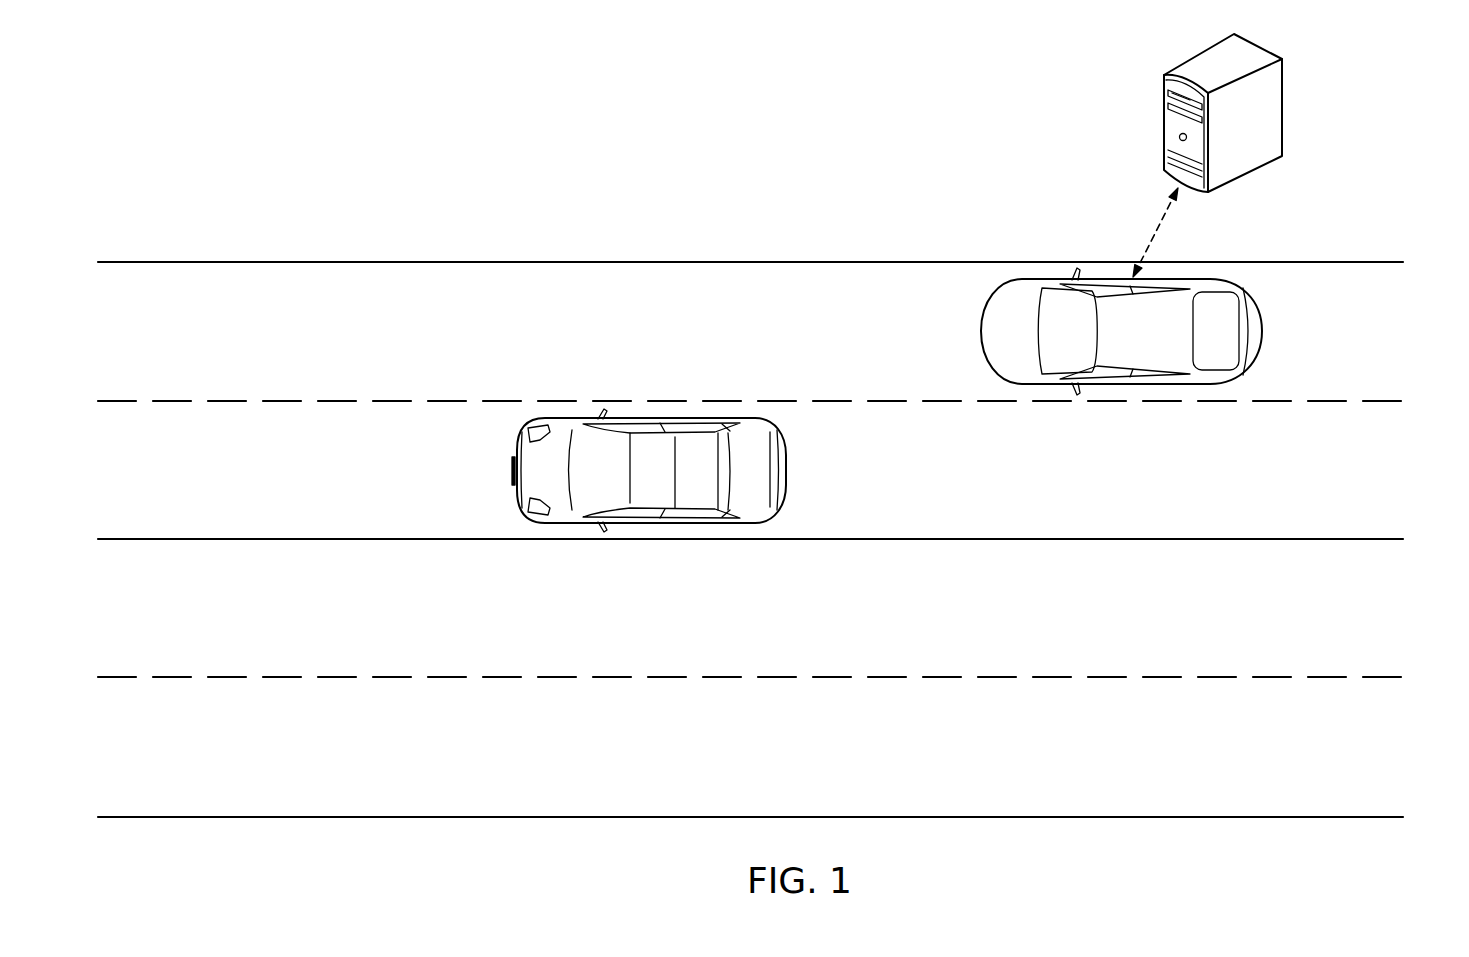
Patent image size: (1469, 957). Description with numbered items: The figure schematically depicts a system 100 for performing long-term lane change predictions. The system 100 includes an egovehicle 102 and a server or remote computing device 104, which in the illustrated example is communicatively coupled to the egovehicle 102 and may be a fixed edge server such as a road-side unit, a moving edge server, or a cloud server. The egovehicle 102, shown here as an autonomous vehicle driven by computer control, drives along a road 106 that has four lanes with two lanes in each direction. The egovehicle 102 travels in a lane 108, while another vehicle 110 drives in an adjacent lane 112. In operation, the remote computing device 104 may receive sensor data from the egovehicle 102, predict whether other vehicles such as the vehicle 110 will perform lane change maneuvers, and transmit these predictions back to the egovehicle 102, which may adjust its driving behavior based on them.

The system 100 is at (230, 128).
The egovehicle 102 is at (1135, 386).
The remote computing device 104 is at (1282, 105).
The road 106 is at (218, 248).
The lane 108 is at (1395, 332).
The vehicle 110 is at (665, 418).
The adjacent lane 112 is at (1395, 470).